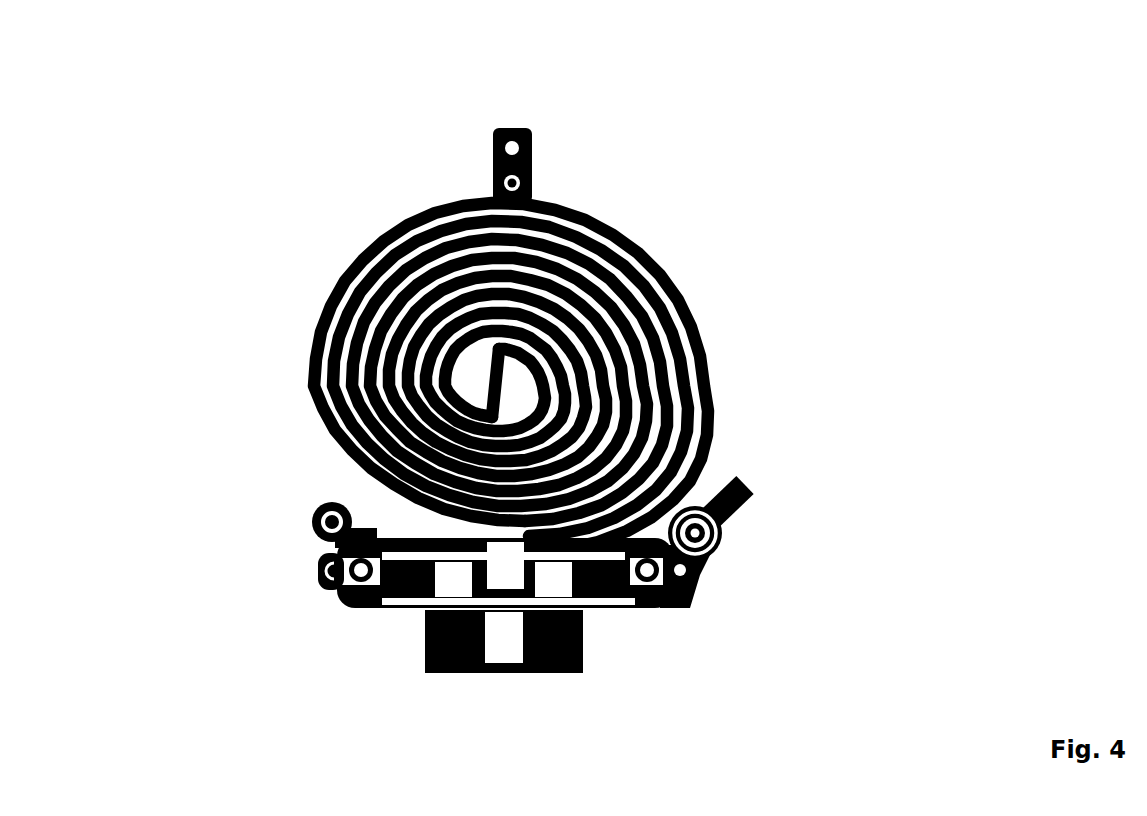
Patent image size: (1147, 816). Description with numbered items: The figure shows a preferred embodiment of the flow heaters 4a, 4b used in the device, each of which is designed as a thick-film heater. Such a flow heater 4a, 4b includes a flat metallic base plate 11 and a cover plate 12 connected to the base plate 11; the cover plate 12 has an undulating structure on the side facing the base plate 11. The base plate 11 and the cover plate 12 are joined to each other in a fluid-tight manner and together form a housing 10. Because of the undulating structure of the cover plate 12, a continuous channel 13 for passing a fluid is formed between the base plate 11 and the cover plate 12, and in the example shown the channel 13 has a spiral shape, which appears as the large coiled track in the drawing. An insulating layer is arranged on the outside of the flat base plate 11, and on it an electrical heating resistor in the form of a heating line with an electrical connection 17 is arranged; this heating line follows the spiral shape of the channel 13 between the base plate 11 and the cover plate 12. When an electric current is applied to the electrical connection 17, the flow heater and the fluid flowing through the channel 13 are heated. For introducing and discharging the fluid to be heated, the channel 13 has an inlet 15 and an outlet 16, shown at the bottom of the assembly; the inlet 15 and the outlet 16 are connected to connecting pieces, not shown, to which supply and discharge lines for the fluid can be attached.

The housing 10 is at (573, 328).
The cover plate 12 is at (370, 242).
The channel 13 is at (492, 362).
The flow heater 4a is at (747, 330).
The flow heater 4b is at (510, 378).
The base plate 11 is at (700, 577).
The electrical connection 17 is at (730, 537).
The inlet 15 is at (558, 680).
The outlet 16 is at (438, 680).